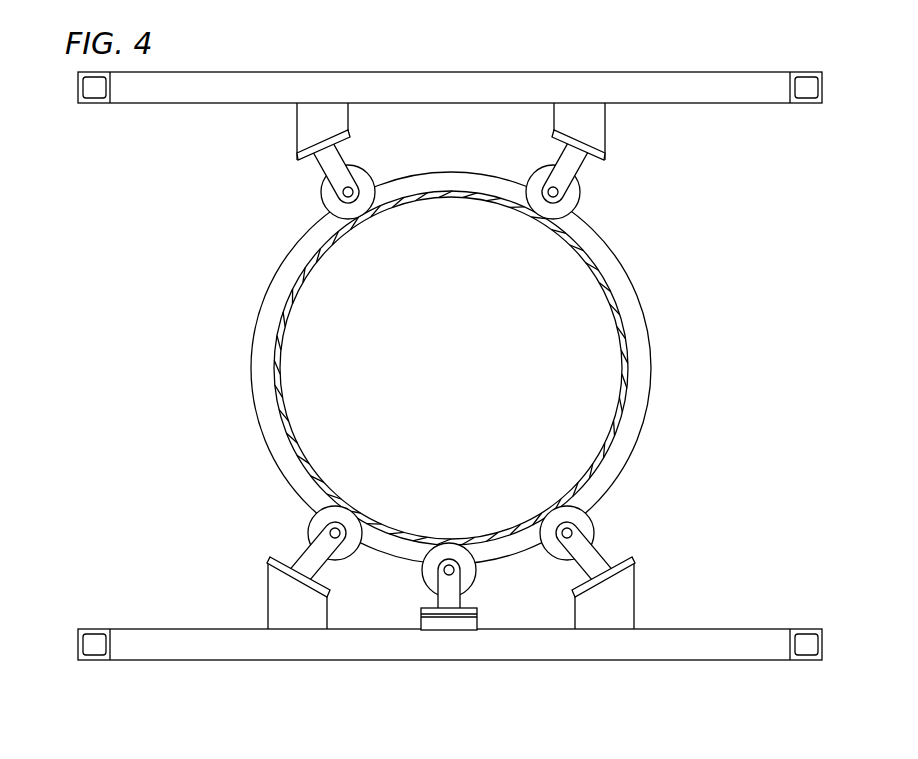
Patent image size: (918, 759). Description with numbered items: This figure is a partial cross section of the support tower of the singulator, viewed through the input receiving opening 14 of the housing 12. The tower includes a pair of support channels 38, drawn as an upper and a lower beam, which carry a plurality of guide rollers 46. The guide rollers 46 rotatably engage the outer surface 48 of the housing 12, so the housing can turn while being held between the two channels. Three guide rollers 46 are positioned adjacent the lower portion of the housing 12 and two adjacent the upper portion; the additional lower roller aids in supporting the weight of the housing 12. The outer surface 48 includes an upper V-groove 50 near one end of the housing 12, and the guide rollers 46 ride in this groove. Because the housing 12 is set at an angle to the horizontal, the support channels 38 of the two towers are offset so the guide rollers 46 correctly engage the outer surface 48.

The housing 12 is at (470, 368).
The input receiving opening 14 is at (456, 371).
The support channels 38 is at (445, 80).
The guide rollers 46 is at (288, 128).
The outer surface 48 is at (286, 257).
The upper V-groove 50 is at (262, 333).